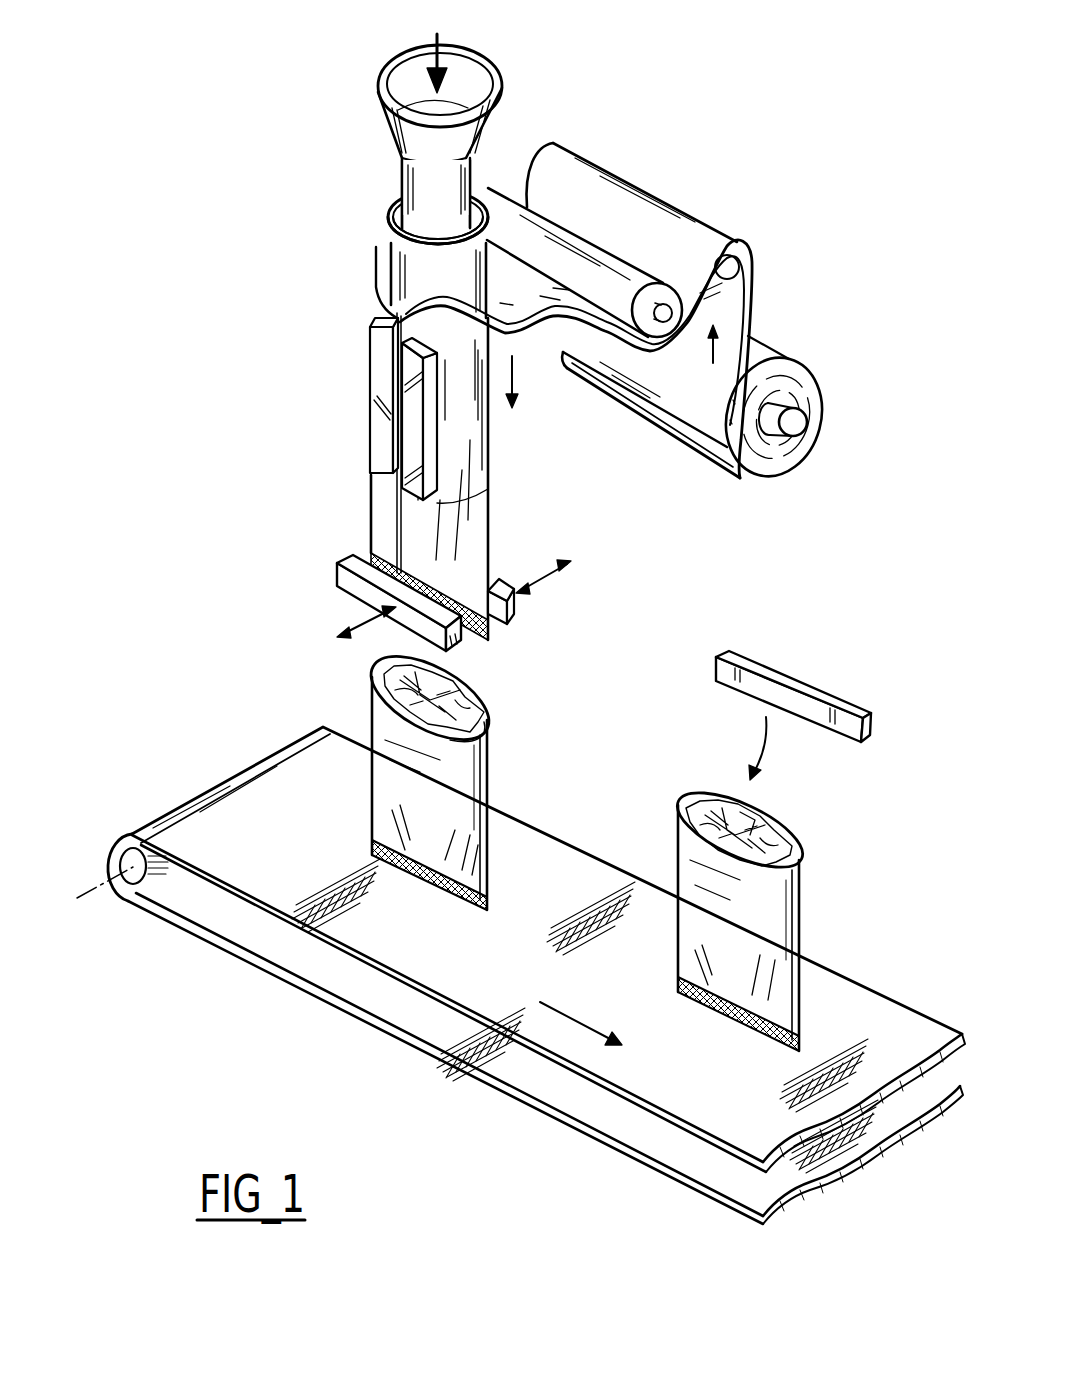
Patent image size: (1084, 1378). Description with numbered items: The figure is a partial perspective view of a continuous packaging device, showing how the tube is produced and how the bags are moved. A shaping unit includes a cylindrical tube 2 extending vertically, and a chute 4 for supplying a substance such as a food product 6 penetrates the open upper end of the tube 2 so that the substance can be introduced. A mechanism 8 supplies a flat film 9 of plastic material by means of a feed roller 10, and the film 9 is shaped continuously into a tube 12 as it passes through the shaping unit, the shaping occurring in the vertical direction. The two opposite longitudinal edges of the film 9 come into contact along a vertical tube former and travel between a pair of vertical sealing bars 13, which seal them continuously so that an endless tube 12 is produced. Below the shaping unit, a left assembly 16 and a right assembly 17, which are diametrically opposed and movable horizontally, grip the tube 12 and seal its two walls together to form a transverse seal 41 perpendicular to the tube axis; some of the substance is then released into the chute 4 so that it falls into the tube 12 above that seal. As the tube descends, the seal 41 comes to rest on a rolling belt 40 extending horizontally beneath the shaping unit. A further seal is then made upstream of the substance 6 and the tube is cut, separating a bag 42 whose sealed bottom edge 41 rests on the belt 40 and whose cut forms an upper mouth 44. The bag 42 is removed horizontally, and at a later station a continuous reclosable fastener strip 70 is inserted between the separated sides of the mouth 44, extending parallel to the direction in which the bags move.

The cylindrical tube 2 is at (407, 264).
The chute 4 is at (468, 73).
The food product 6 is at (443, 702).
The film supply mechanism 8 is at (797, 420).
The flat film 9 is at (746, 290).
The feed roller 10 is at (795, 375).
The tube 12 is at (463, 452).
The vertical sealing bars 13 is at (417, 443).
The left assembly 16 is at (514, 604).
The right assembly 17 is at (357, 582).
The rolling belt 40 is at (874, 1014).
The transverse seal 41 is at (437, 887).
The bag 42 is at (475, 775).
The upper mouth 44 is at (483, 706).
The reclosable fastener strip 70 is at (833, 709).